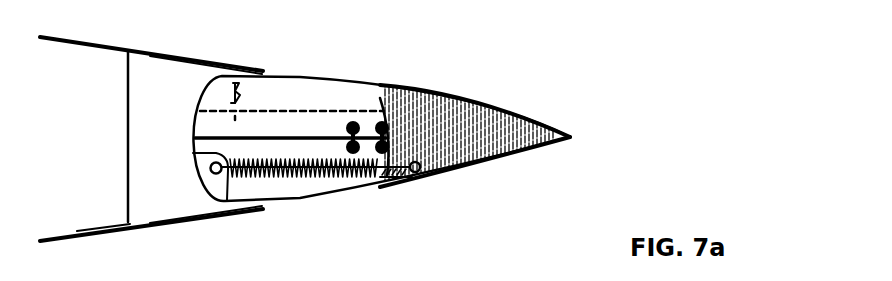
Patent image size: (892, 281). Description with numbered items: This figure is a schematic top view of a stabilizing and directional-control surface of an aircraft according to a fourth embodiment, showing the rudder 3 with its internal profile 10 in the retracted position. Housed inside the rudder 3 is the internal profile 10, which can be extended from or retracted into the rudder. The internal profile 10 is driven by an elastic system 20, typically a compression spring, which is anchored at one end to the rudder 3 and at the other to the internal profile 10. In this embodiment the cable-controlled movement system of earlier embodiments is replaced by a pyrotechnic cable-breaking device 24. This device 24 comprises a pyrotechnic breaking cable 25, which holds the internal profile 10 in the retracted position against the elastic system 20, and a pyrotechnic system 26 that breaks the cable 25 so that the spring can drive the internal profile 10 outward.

The rudder 3 is at (383, 187).
The internal profile 10 is at (482, 139).
The elastic system 20 is at (313, 179).
The pyrotechnic cable-breaking device 24 is at (310, 105).
The pyrotechnic breaking cable 25 is at (258, 110).
The pyrotechnic system 26 is at (234, 74).